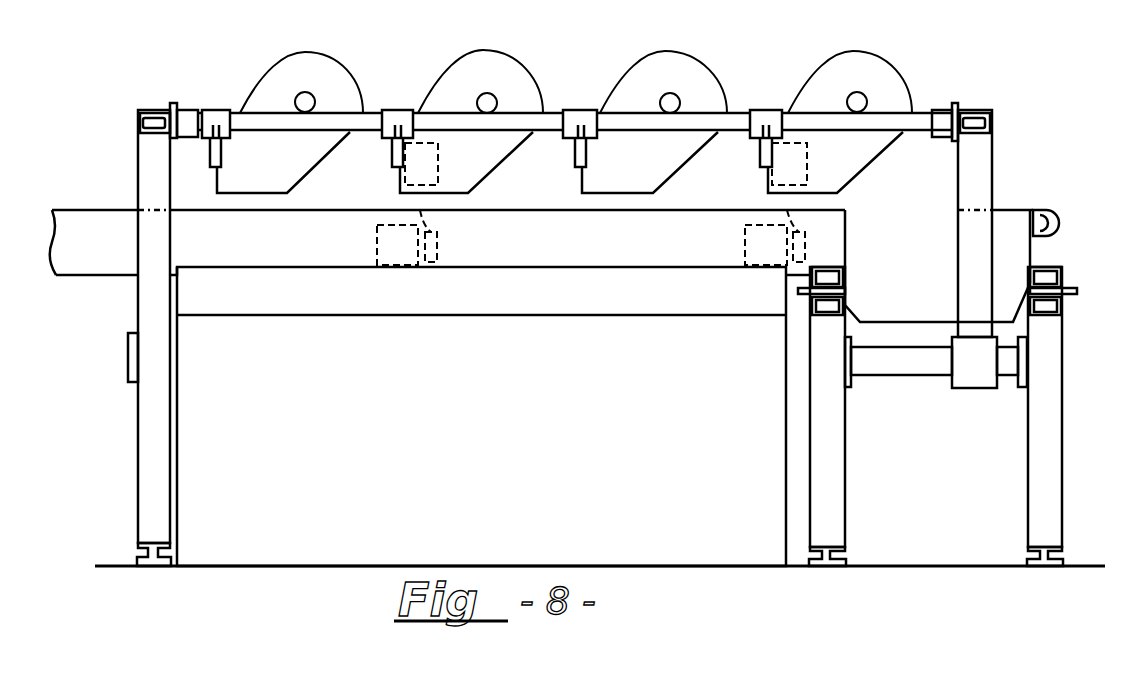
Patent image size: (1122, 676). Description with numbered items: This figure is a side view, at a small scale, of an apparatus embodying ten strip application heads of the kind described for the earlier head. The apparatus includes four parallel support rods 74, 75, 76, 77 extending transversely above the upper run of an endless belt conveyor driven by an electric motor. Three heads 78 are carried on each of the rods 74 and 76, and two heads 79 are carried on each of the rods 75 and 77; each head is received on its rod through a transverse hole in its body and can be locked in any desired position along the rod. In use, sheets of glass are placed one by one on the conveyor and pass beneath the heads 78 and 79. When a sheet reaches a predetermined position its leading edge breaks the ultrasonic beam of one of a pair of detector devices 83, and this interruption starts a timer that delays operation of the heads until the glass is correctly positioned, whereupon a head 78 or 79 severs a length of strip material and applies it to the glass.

The support rod 74 is at (308, 84).
The support rod 75 is at (495, 84).
The support rod 76 is at (678, 85).
The support rod 77 is at (858, 93).
The head 78 is at (360, 55).
The head 79 is at (525, 78).
The detector device 83 is at (402, 177).